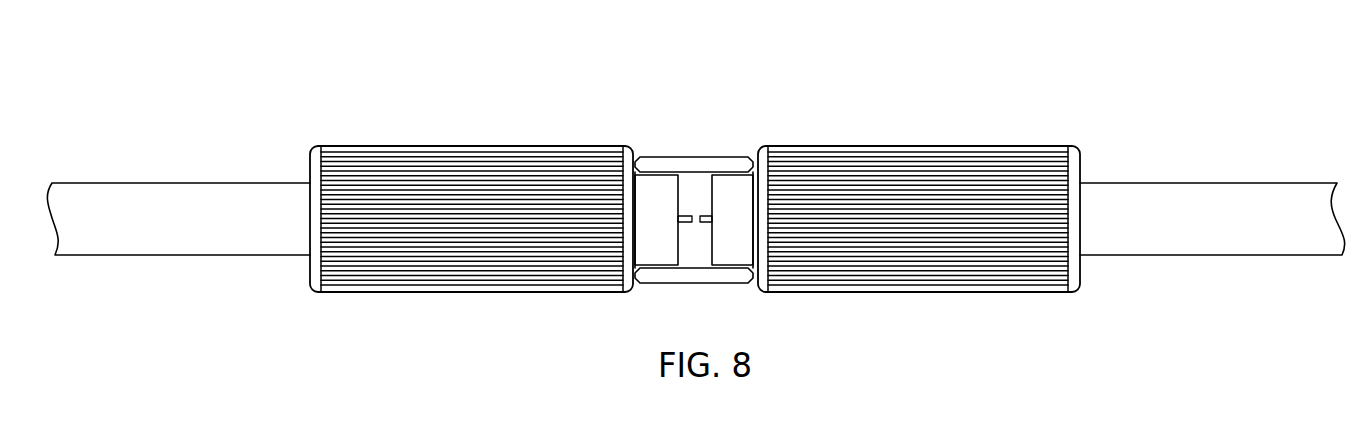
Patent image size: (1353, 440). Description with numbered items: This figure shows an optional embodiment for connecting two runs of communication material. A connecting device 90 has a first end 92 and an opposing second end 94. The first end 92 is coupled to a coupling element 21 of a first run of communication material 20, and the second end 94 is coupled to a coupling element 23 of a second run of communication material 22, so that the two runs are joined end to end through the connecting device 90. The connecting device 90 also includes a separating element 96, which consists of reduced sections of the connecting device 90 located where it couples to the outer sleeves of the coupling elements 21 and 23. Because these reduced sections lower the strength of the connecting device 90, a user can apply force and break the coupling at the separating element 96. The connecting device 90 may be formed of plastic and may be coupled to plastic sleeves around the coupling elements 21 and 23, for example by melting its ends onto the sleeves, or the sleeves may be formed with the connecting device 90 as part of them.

The first run of communication material 20 is at (132, 200).
The coupling element 21 is at (373, 175).
The second run of communication material 22 is at (1177, 205).
The coupling element 23 is at (947, 198).
The connecting device 90 is at (704, 158).
The first end 92 is at (642, 162).
The second end 94 is at (697, 111).
The separating element 96 is at (632, 154).